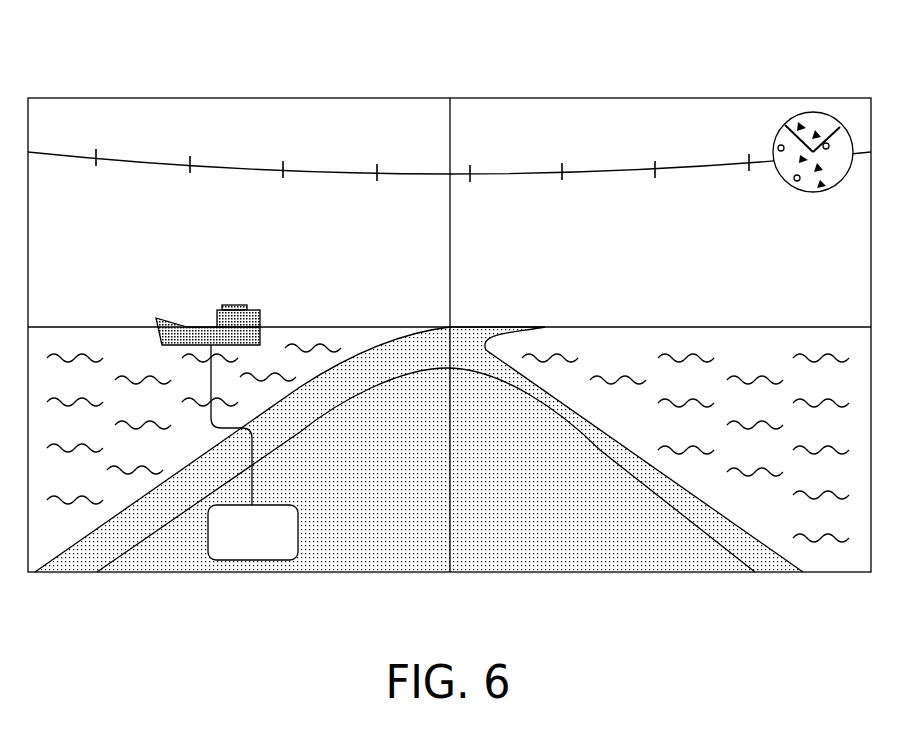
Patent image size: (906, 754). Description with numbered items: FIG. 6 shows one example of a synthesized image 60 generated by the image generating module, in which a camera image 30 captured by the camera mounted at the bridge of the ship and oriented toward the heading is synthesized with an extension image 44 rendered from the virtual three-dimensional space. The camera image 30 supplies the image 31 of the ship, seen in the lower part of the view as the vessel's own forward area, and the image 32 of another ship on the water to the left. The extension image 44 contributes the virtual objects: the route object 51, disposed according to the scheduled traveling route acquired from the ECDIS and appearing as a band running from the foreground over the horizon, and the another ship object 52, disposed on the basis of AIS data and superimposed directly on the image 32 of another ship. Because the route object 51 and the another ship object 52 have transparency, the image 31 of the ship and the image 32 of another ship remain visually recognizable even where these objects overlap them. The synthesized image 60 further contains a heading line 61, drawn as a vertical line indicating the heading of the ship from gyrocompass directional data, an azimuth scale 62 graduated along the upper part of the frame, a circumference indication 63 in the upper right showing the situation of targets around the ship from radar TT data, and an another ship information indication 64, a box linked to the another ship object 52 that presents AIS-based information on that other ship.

The synthesized image 60 is at (449, 299).
The camera image 30 is at (449, 335).
The extension image 44 is at (142, 97).
The heading line 61 is at (452, 122).
The azimuth scale 62 is at (617, 170).
The circumference indication 63 is at (818, 115).
The another ship information indication 64 is at (252, 560).
The image of the ship 31 is at (482, 572).
The route object 51 is at (413, 347).
The another ship object 52 is at (231, 284).
The image of another ship 32 is at (233, 305).